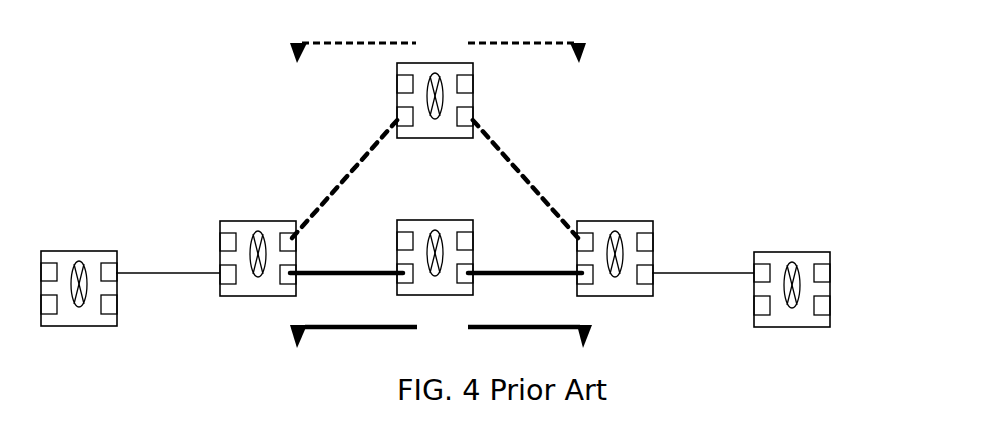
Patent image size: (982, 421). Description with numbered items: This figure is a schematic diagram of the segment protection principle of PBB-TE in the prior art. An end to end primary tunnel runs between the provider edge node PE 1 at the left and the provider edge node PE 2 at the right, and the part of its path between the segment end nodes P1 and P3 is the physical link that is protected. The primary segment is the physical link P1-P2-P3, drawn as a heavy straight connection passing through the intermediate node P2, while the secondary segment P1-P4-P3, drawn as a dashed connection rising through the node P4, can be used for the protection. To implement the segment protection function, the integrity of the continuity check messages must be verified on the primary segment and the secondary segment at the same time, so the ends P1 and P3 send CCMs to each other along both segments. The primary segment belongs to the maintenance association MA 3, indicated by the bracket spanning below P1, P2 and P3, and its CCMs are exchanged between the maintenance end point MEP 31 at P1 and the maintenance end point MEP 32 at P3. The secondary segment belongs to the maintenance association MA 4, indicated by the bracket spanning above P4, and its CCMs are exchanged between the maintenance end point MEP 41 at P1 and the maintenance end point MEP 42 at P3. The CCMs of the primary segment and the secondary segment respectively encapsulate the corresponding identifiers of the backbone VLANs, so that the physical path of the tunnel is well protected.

The provider edge node PE 1 is at (79, 274).
The provider edge node PE 2 is at (792, 276).
The segment end node P1 is at (258, 243).
The intermediate node of primary segment P2 is at (435, 244).
The segment end node P3 is at (615, 244).
The intermediate node of secondary segment P4 is at (454, 100).
The maintenance end point MEP 31 is at (334, 293).
The maintenance end point MEP 32 is at (545, 294).
The maintenance end point MEP 41 is at (331, 177).
The maintenance end point MEP 42 is at (541, 177).
The maintenance association MA 3 is at (441, 334).
The maintenance association MA 4 is at (438, 49).